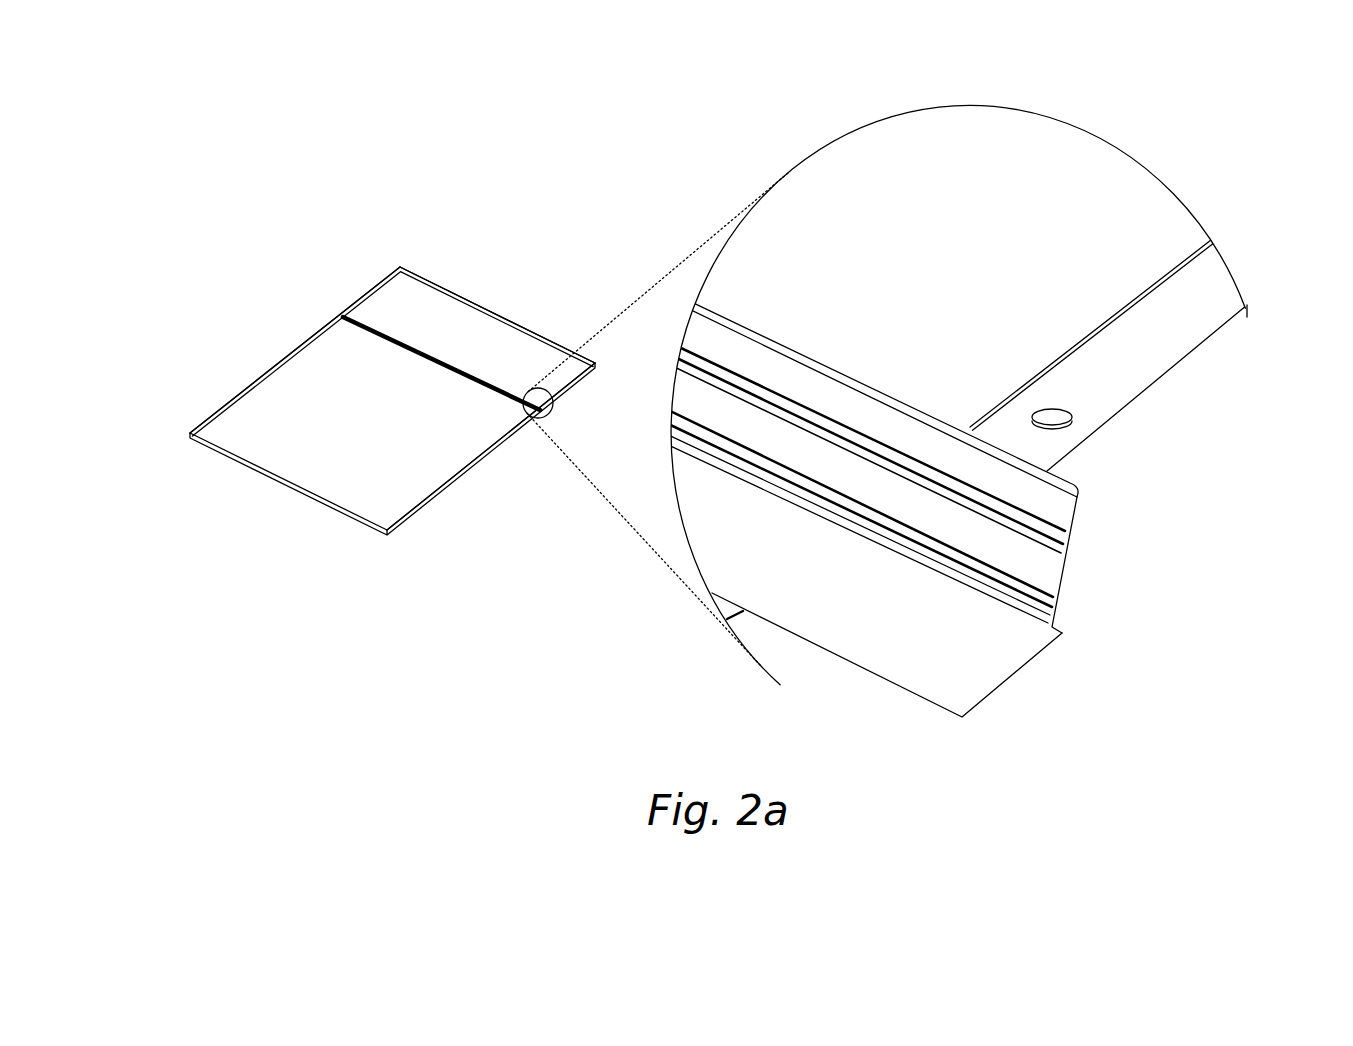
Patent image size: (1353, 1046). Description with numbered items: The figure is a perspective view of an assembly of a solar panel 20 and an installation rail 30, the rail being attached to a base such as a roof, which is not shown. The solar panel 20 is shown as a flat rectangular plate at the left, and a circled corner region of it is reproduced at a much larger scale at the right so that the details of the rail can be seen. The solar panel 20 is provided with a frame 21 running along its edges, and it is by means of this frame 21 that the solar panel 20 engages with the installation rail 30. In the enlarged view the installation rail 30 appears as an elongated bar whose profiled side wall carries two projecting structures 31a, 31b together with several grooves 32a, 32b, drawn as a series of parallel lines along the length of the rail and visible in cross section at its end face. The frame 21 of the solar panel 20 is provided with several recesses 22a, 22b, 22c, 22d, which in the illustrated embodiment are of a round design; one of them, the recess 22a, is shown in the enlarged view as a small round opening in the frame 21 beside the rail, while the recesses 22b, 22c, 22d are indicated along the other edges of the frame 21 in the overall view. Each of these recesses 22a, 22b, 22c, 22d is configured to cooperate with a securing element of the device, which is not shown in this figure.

The solar panel 20 is at (340, 460).
The frame 21 is at (288, 344).
The recess 22a is at (1052, 420).
The recess 22b is at (442, 495).
The recess 22c is at (233, 388).
The recess 22d is at (345, 297).
The installation rail 30 is at (764, 521).
The projecting structure 31a is at (1056, 631).
The projecting structure 31b is at (1079, 497).
The groove 32a is at (1062, 597).
The groove 32b is at (1064, 543).